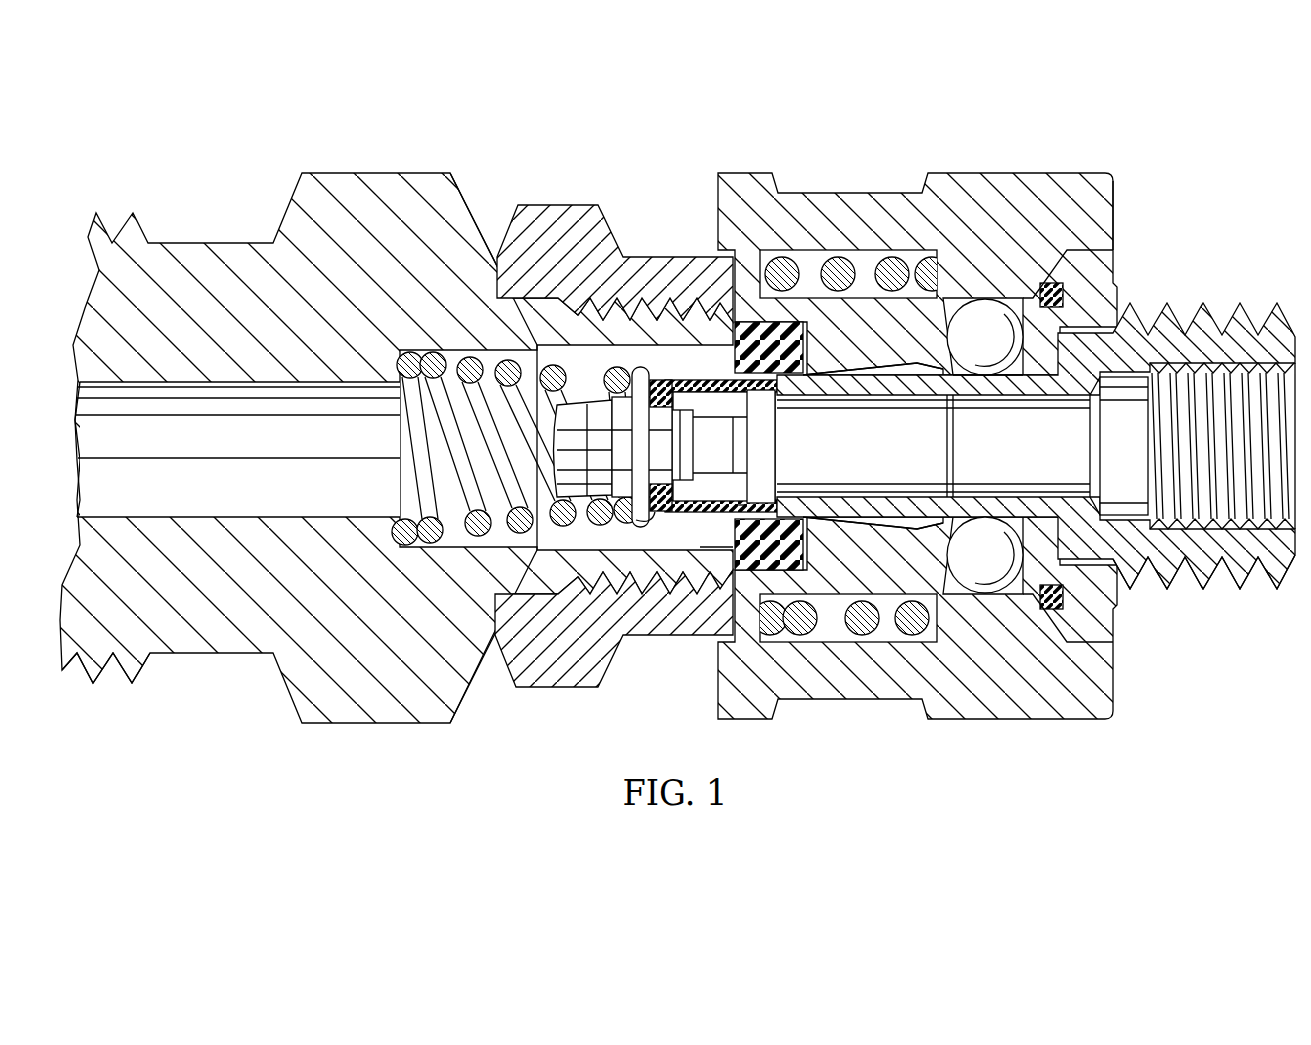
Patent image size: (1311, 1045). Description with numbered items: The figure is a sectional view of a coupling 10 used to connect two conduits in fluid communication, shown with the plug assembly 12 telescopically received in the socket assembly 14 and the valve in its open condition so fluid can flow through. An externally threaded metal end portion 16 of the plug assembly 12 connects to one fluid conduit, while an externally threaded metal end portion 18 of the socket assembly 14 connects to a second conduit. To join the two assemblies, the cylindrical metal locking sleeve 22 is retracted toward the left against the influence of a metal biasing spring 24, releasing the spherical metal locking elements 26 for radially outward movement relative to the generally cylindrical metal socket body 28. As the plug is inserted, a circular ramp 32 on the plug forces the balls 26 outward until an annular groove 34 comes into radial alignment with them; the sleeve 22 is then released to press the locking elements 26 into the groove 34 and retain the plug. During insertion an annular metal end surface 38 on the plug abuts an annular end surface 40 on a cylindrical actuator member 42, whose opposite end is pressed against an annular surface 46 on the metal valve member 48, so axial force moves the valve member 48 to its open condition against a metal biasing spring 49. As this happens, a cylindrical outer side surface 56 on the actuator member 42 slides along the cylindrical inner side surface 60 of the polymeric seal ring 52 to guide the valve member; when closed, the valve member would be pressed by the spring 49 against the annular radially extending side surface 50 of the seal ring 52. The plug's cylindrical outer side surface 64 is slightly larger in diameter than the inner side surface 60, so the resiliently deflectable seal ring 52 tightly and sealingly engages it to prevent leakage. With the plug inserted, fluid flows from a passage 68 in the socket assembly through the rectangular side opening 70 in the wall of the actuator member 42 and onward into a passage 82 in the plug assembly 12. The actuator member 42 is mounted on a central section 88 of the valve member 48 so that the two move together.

The coupling 10 is at (1125, 155).
The plug assembly 12 is at (1036, 440).
The socket assembly 14 is at (490, 152).
The externally threaded metal end portion 16 is at (1233, 581).
The externally threaded metal end portion 18 is at (123, 681).
The locking sleeve 22 is at (853, 218).
The biasing spring 24 is at (870, 642).
The locking elements 26 is at (990, 333).
The socket body 28 is at (652, 278).
The circular ramp 32 is at (927, 372).
The annular groove 34 is at (1007, 378).
The annular end surface 38 is at (775, 483).
The annular end surface 40 is at (780, 429).
The actuator member 42 is at (697, 372).
The annular surface 46 is at (652, 515).
The valve member 48 is at (588, 400).
The biasing spring 49 is at (430, 476).
The annular radially extending side surface 50 is at (717, 548).
The seal ring 52 is at (752, 572).
The cylindrical outer side surface 56 is at (700, 505).
The cylindrical inner side surface 60 is at (743, 502).
The cylindrical outer side surface 64 is at (893, 522).
The passage 68 is at (118, 445).
The rectangular side opening 70 is at (747, 450).
The passage 82 is at (1130, 488).
The central section 88 is at (658, 428).